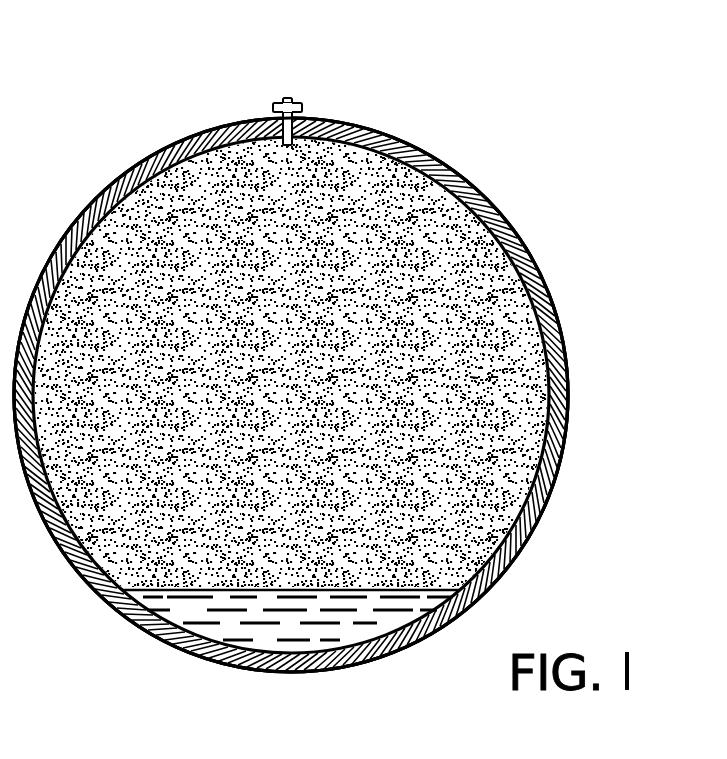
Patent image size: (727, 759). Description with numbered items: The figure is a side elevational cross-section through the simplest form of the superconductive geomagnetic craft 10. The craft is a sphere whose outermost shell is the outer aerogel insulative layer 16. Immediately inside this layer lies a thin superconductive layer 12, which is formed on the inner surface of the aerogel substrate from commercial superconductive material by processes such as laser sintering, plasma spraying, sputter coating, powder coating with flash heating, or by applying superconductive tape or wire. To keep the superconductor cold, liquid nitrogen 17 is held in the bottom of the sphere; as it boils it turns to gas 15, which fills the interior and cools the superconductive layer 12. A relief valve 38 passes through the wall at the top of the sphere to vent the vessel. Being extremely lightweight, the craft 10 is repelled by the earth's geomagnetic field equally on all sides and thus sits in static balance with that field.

The superconductive geomagnetic craft 10 is at (553, 143).
The thin superconductive layer 12 is at (138, 163).
The gas 15 is at (484, 366).
The outer aerogel insulative layer 16 is at (237, 120).
The liquid nitrogen 17 is at (332, 632).
The relief valve 38 is at (308, 107).